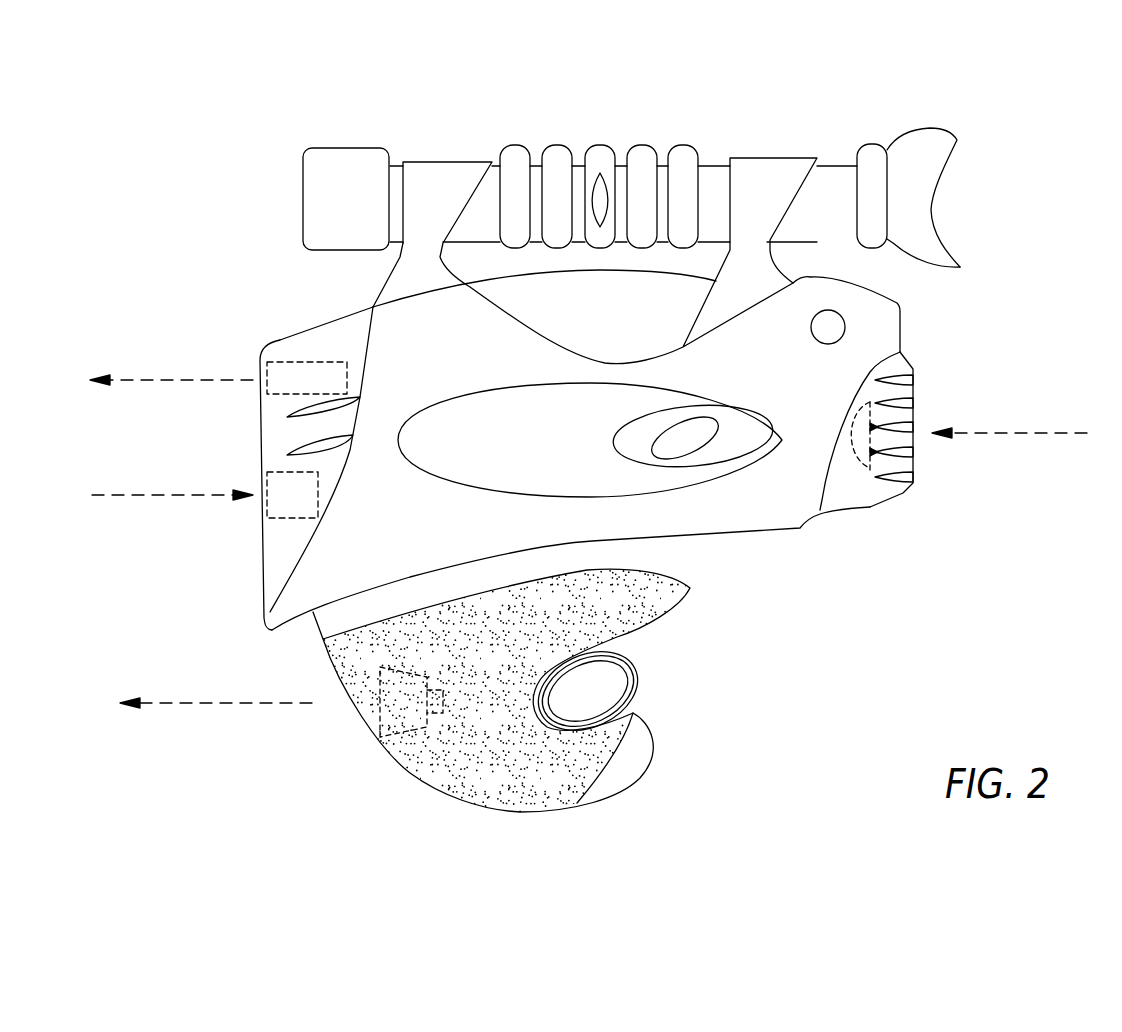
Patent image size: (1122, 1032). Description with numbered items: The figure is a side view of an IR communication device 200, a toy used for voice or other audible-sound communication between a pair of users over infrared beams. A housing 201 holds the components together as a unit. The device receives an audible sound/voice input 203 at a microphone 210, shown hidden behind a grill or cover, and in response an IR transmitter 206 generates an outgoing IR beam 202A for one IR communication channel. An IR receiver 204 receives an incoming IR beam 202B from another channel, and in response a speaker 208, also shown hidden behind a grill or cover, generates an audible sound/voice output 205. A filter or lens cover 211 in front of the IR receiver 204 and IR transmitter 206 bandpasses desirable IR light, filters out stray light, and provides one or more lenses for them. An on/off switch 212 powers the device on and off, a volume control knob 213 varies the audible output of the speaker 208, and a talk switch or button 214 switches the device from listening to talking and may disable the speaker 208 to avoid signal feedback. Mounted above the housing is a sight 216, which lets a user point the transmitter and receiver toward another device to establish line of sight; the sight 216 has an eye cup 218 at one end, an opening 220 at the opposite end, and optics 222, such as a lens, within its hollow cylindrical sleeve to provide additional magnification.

The IR communication device 200 is at (450, 162).
The housing 201 is at (397, 551).
The outgoing IR beam 202A is at (170, 381).
The incoming IR beam 202B is at (132, 496).
The audible sound/voice input 203 is at (1020, 433).
The IR receiver 204 is at (263, 520).
The audible sound/voice output 205 is at (310, 703).
The IR transmitter 206 is at (305, 362).
The speaker 208 is at (380, 737).
The microphone 210 is at (870, 475).
The filter or lens cover 211 is at (263, 580).
The on/off switch 212 is at (627, 680).
The volume control knob 213 is at (845, 327).
The talk switch or button 214 is at (690, 453).
The sight 216 is at (933, 150).
The eye cup 218 is at (937, 245).
The opening 220 is at (303, 200).
The optics 222 is at (598, 173).